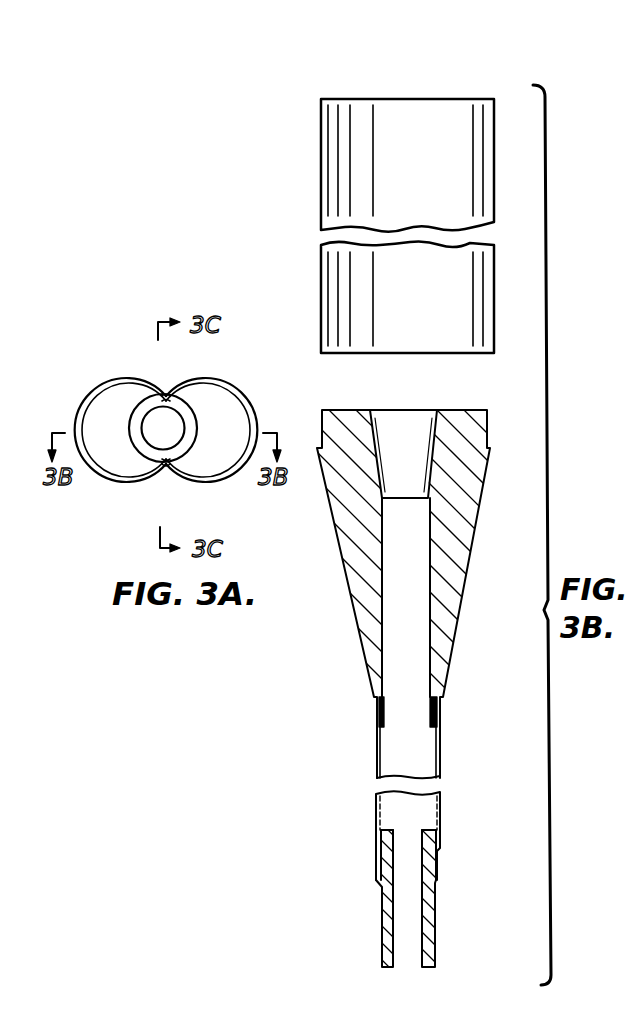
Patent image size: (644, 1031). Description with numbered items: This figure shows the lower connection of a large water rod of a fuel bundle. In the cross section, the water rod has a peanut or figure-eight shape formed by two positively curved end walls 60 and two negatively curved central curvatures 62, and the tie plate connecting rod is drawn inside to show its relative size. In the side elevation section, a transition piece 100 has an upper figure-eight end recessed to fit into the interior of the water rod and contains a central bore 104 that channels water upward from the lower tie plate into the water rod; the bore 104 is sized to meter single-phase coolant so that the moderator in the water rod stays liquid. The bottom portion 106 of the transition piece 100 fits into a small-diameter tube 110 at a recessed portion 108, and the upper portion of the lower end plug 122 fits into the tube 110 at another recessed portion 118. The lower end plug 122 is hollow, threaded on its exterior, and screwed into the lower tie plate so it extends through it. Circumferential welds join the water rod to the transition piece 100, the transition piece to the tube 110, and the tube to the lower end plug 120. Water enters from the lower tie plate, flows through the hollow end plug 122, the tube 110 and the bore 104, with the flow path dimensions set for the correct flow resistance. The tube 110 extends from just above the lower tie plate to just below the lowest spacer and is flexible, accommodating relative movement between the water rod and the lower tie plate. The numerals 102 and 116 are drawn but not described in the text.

In FIG. 3A, the positively curved end walls 60 is at (74, 418).
In FIG. 3A, the negatively curved central curvatures 62 is at (164, 390).
In FIG. 3B, the transition piece 100 is at (474, 565).
In FIG. 3B, the tapered inlet recess 102 is at (490, 447).
In FIG. 3B, the central bore 104 is at (383, 596).
In FIG. 3B, the bottom portion of the transition piece 106 is at (378, 698).
In FIG. 3B, the recessed portion 108 is at (379, 710).
In FIG. 3B, the tube 110 is at (368, 763).
In FIG. 3B, the tube 116 is at (378, 817).
In FIG. 3B, the recessed portion 118 is at (378, 836).
In FIG. 3B, the lower end plug 120 is at (452, 898).
In FIG. 3B, the lower end plug 122 is at (438, 943).